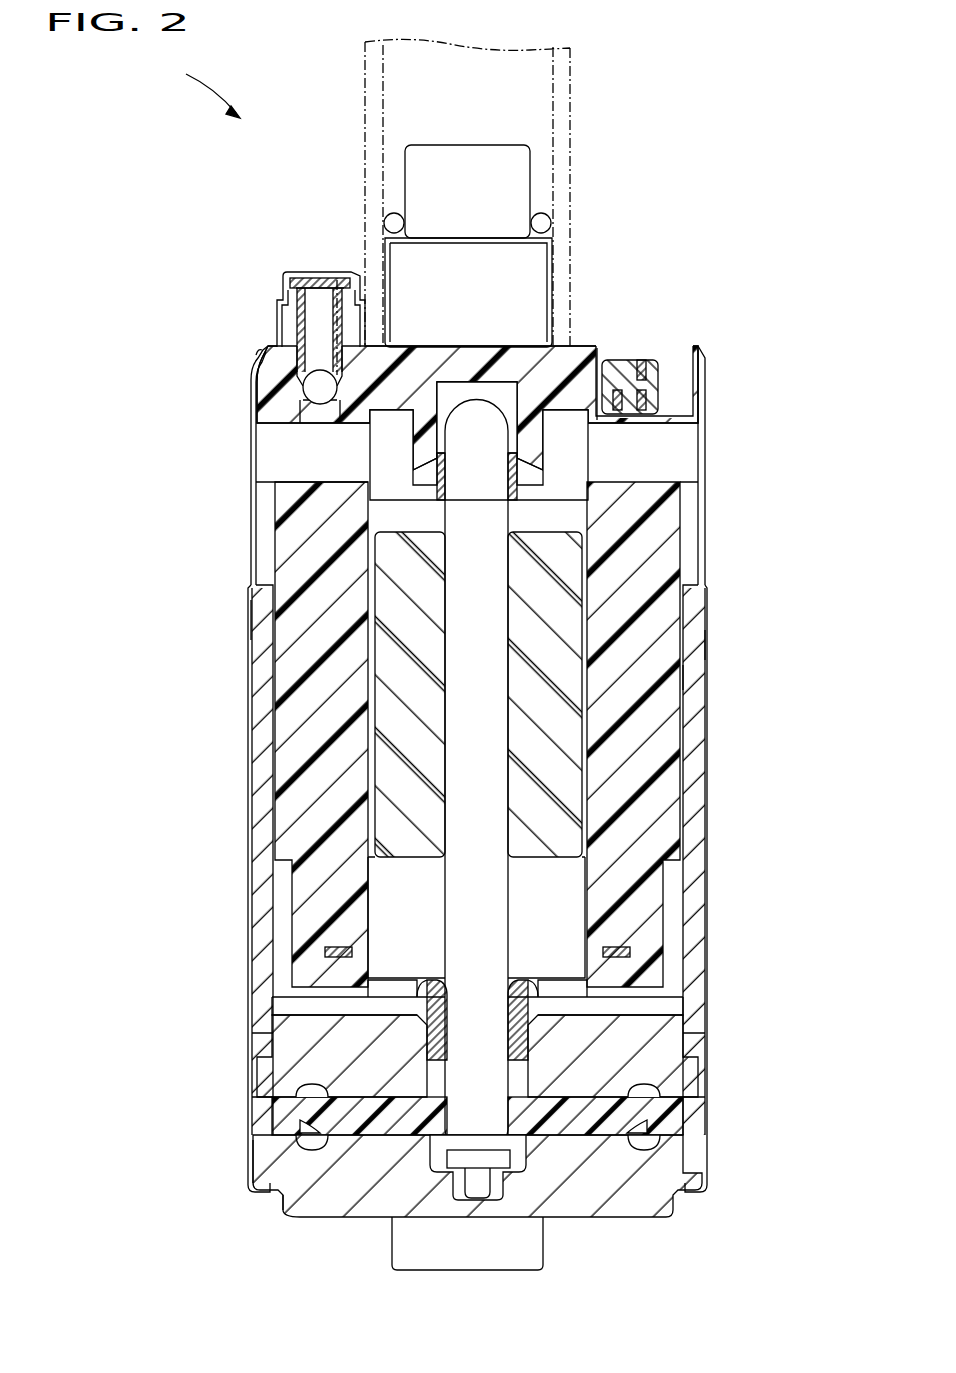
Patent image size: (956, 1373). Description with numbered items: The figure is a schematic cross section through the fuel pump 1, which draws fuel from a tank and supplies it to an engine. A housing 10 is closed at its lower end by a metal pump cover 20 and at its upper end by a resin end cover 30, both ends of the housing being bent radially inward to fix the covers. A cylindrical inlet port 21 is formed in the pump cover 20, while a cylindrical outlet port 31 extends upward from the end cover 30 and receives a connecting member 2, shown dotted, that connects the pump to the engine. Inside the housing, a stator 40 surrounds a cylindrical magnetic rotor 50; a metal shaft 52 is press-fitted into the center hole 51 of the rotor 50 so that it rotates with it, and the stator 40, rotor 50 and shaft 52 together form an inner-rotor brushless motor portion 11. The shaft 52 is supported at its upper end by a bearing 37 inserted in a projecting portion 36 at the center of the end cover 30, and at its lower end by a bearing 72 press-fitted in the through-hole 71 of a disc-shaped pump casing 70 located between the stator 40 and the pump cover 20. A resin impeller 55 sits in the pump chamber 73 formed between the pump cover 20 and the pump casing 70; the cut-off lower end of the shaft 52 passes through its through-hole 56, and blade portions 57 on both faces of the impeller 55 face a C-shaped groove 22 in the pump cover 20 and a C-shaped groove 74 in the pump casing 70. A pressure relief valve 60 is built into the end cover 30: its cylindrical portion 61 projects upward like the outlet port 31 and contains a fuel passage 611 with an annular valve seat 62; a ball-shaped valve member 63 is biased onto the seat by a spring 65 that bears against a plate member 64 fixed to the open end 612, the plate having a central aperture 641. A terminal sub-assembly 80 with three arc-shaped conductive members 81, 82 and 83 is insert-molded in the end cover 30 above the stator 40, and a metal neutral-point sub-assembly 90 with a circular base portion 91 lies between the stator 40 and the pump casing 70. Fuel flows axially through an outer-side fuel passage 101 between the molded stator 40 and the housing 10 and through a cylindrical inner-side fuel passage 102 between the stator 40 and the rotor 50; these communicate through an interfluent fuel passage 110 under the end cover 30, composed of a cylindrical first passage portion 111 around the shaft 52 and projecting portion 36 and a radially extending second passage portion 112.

The fuel pump 1 is at (201, 87).
The connecting member 2 is at (575, 103).
The housing 10 is at (260, 800).
The motor portion 11 is at (258, 625).
The pump cover 20 is at (360, 1217).
The inlet port 21 is at (515, 1270).
The C-shaped groove 22 is at (270, 1150).
The end cover 30 is at (585, 355).
The outlet port 31 is at (463, 145).
The projecting portion 36 is at (543, 482).
The bearing 37 is at (548, 496).
The stator 40 is at (310, 675).
The rotor 50 is at (576, 750).
The center hole 51 is at (500, 765).
The shaft 52 is at (490, 815).
The impeller 55 is at (695, 1118).
The through-hole 56 is at (477, 1150).
The blade portions 57 is at (655, 1100).
The pressure relief valve 60 is at (282, 283).
The cylindrical portion 61 is at (279, 300).
The fuel passage 611 is at (300, 323).
The open end 612 is at (337, 283).
The valve seat 62 is at (300, 398).
The ball-shaped valve member 63 is at (316, 387).
The plate member 64 is at (300, 280).
The aperture 641 is at (318, 283).
The spring 65 is at (258, 348).
The pump casing 70 is at (320, 1040).
The through-hole 71 is at (428, 1000).
The bearing 72 is at (430, 1020).
The pump chamber 73 is at (293, 1110).
The C-shaped groove 74 is at (310, 1107).
The terminal sub-assembly 80 is at (693, 357).
The conductive member 81 is at (597, 360).
The conductive member 82 is at (668, 400).
The conductive member 83 is at (660, 375).
The neutral-point sub-assembly 90 is at (655, 1005).
The base portion 91 is at (618, 950).
The outer-side fuel passage 101 is at (690, 642).
The inner-side fuel passage 102 is at (598, 676).
The interfluent fuel passage 110 is at (390, 468).
The first passage portion 111 is at (390, 508).
The second passage portion 112 is at (318, 450).